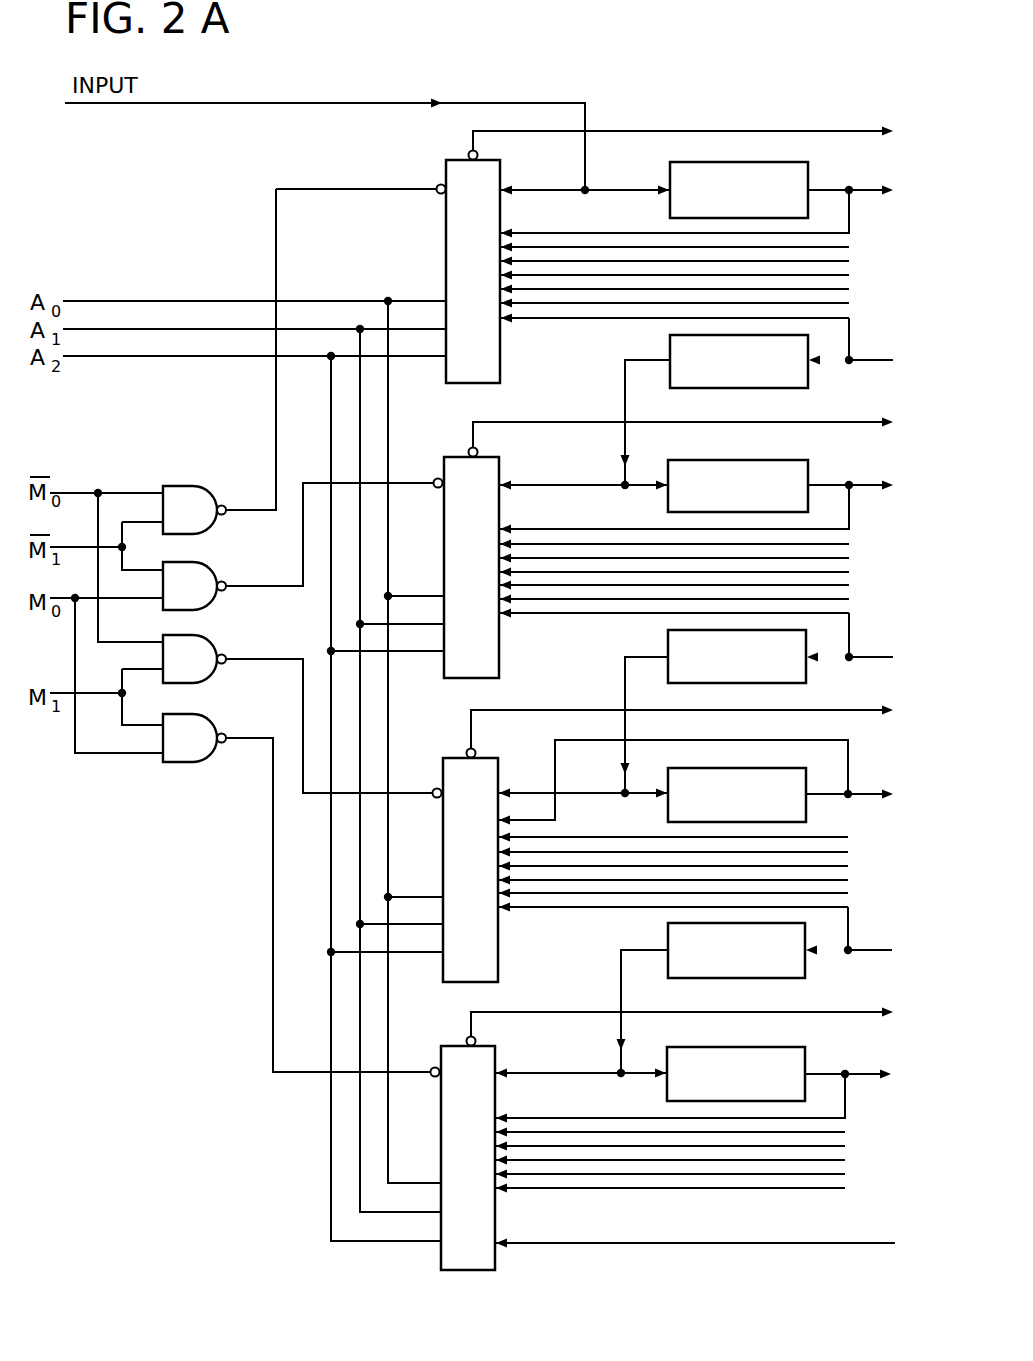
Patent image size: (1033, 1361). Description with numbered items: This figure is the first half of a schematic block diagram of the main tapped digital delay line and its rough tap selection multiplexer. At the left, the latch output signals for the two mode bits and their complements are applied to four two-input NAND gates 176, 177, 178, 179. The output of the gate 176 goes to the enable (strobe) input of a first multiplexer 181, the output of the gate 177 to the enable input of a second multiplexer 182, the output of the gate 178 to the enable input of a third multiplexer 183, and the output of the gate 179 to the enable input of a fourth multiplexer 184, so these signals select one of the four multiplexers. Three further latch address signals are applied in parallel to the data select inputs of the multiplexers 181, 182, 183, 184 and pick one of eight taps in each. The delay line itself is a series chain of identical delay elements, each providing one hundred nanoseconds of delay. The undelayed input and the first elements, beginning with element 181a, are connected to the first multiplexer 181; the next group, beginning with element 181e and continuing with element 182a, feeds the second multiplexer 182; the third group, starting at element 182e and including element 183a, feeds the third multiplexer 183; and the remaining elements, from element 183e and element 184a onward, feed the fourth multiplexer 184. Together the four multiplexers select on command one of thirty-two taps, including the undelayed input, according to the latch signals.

The two input NAND gate 176 is at (200, 492).
The two input NAND gate 177 is at (200, 568).
The two input NAND gate 178 is at (204, 640).
The two input NAND gate 179 is at (204, 720).
The first multiplexer 181 is at (492, 196).
The digital delay element 181a is at (768, 201).
The digital delay element 181e is at (768, 374).
The second multiplexer 182 is at (490, 494).
The digital delay element 182a is at (768, 497).
The digital delay element 182e is at (766, 669).
The third multiplexer 183 is at (489, 804).
The digital delay element 183a is at (767, 806).
The digital delay element 183e is at (765, 962).
The fourth multiplexer 184 is at (487, 1083).
The digital delay element 184a is at (766, 1085).